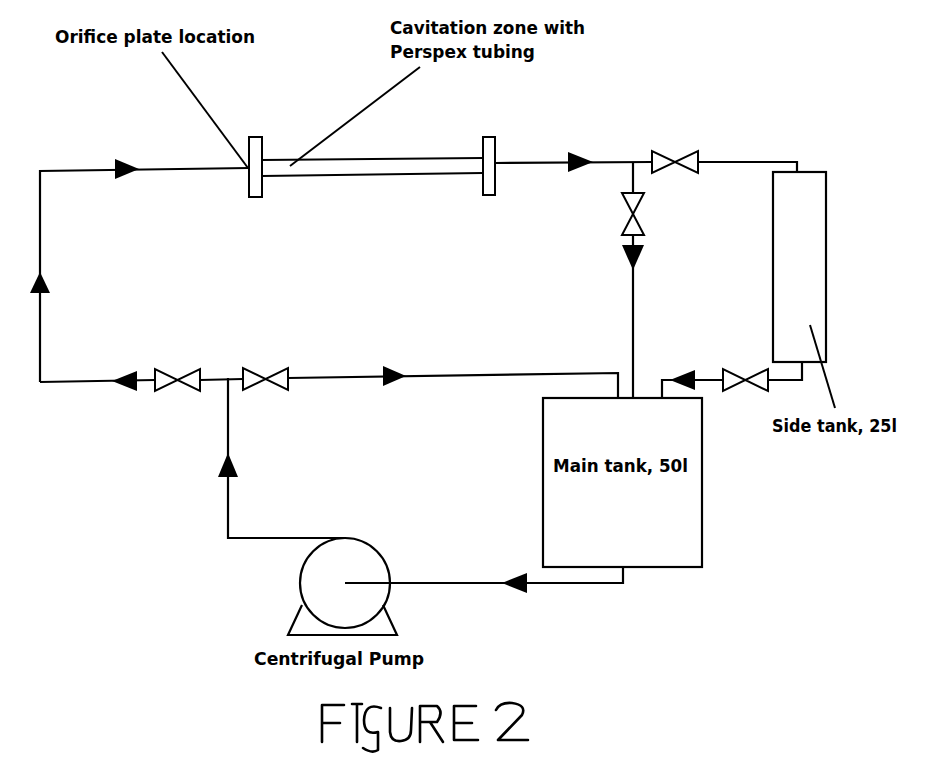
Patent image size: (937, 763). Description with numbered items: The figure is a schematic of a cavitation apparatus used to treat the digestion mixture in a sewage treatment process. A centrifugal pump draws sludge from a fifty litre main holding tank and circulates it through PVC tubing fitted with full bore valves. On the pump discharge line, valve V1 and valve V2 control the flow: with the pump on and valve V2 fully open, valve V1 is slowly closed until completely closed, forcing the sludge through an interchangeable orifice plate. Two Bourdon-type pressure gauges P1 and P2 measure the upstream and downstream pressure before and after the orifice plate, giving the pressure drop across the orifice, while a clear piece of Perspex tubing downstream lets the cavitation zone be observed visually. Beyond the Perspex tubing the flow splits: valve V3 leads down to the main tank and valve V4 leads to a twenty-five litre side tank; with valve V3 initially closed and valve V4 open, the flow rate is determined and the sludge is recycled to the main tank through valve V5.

The pressure gauge P1 is at (255, 137).
The pressure gauge P2 is at (488, 137).
The valve V1 is at (265, 364).
The valve V2 is at (177, 366).
The valve V3 is at (613, 214).
The valve V4 is at (675, 148).
The valve V5 is at (745, 369).